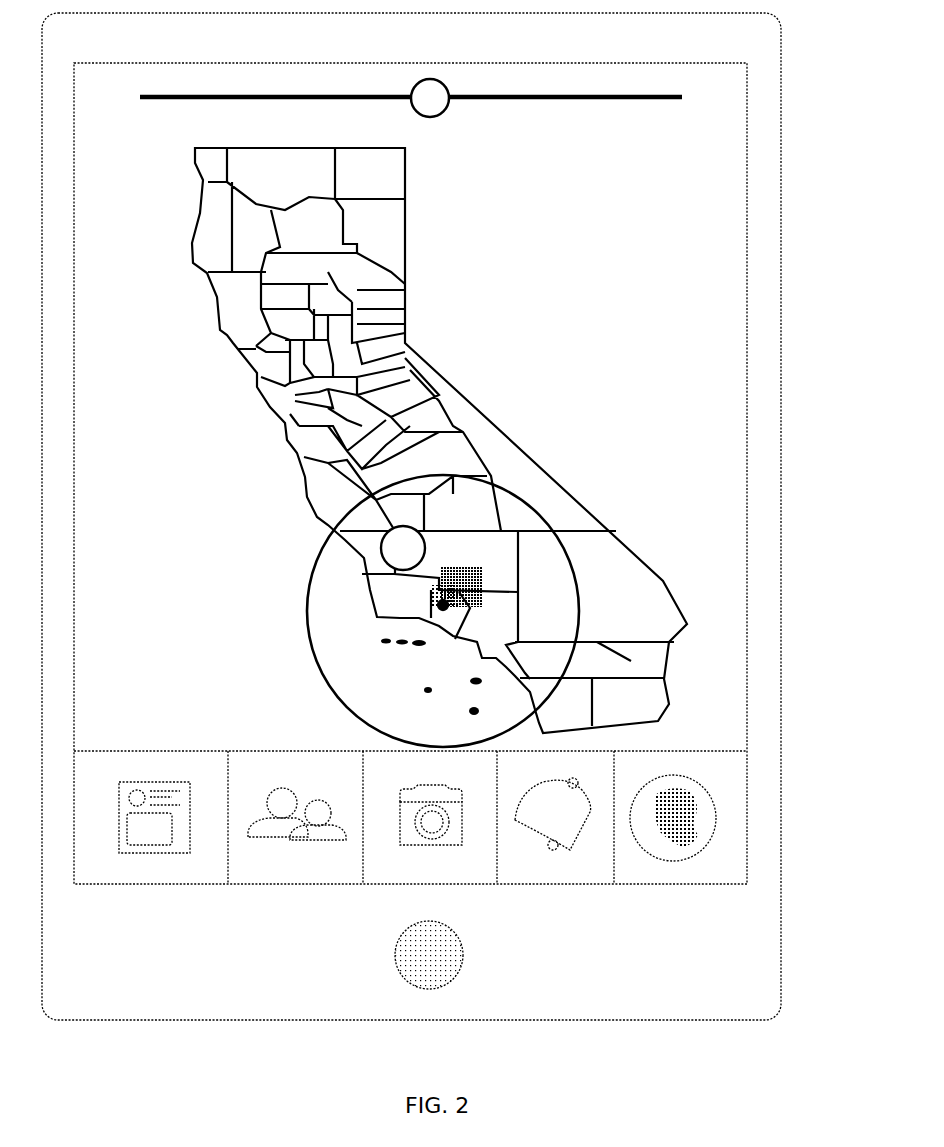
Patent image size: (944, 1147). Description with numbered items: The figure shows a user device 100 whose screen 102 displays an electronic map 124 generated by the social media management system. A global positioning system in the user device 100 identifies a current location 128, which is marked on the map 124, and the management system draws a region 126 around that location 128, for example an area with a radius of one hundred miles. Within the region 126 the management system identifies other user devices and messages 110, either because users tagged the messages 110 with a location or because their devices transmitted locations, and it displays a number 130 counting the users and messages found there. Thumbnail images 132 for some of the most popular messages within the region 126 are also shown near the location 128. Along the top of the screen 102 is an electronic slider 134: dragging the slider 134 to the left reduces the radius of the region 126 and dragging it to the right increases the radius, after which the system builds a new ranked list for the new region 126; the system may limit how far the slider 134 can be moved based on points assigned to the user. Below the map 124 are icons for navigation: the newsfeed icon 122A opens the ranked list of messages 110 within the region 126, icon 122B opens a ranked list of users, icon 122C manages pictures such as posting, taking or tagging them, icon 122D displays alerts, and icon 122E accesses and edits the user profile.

The user device 100 is at (781, 282).
The screen 102 is at (747, 467).
The messages 110 is at (478, 585).
The newsfeed icon 122A is at (125, 885).
The icon 122B is at (273, 885).
The icon 122C is at (455, 885).
The icon 122D is at (548, 885).
The icon 122E is at (664, 885).
The electronic map 124 is at (210, 350).
The region 126 is at (308, 660).
The current location 128 is at (441, 611).
The number 130 is at (426, 547).
The thumbnail images 132 is at (432, 596).
The electronic slider 134 is at (528, 100).